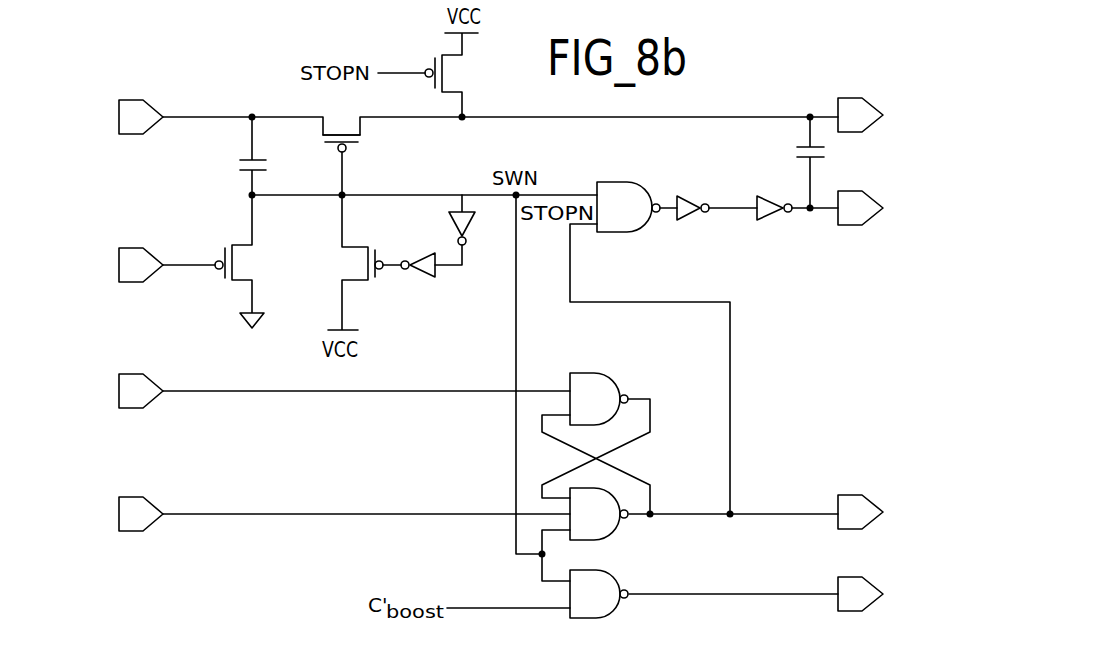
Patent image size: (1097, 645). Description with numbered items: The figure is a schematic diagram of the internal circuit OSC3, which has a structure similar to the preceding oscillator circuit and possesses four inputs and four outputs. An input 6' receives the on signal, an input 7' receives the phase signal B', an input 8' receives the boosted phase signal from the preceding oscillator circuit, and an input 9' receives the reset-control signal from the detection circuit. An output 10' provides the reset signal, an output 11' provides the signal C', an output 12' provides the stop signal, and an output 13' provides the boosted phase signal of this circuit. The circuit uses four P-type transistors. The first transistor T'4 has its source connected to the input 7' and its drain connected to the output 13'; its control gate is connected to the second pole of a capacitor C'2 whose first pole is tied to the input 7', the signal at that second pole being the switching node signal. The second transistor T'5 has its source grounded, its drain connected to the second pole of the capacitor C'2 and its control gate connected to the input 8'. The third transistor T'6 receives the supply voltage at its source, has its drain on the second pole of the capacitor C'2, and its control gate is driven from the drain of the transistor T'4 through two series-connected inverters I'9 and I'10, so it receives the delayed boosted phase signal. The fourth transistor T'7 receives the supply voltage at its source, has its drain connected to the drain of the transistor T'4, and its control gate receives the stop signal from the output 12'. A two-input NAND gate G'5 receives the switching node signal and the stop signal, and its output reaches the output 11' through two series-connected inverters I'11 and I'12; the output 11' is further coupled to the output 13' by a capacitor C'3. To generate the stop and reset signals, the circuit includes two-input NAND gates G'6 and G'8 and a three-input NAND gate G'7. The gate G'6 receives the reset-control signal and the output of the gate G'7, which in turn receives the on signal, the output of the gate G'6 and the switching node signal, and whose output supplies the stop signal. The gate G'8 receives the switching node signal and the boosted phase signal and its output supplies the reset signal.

The input 6' is at (120, 494).
The input 7' is at (127, 94).
The input 8' is at (121, 258).
The input 9' is at (117, 371).
The output 10' is at (868, 576).
The output 11' is at (873, 239).
The output 12' is at (889, 493).
The output 13' is at (884, 98).
The first transistor T'4 is at (352, 142).
The second transistor T'5 is at (229, 261).
The third transistor T'6 is at (352, 262).
The fourth transistor T'7 is at (445, 75).
The capacitor C'2 is at (219, 156).
The capacitor C'3 is at (782, 162).
The NAND logic gate G'5 is at (637, 189).
The NAND logic gate G'6 is at (596, 425).
The NAND logic gate G'7 is at (616, 515).
The NAND logic gate G'8 is at (623, 582).
The inverter I'9 is at (464, 237).
The inverter I'10 is at (421, 296).
The inverter I'11 is at (717, 239).
The inverter I'12 is at (797, 239).
The circuit OSC3 is at (815, 378).